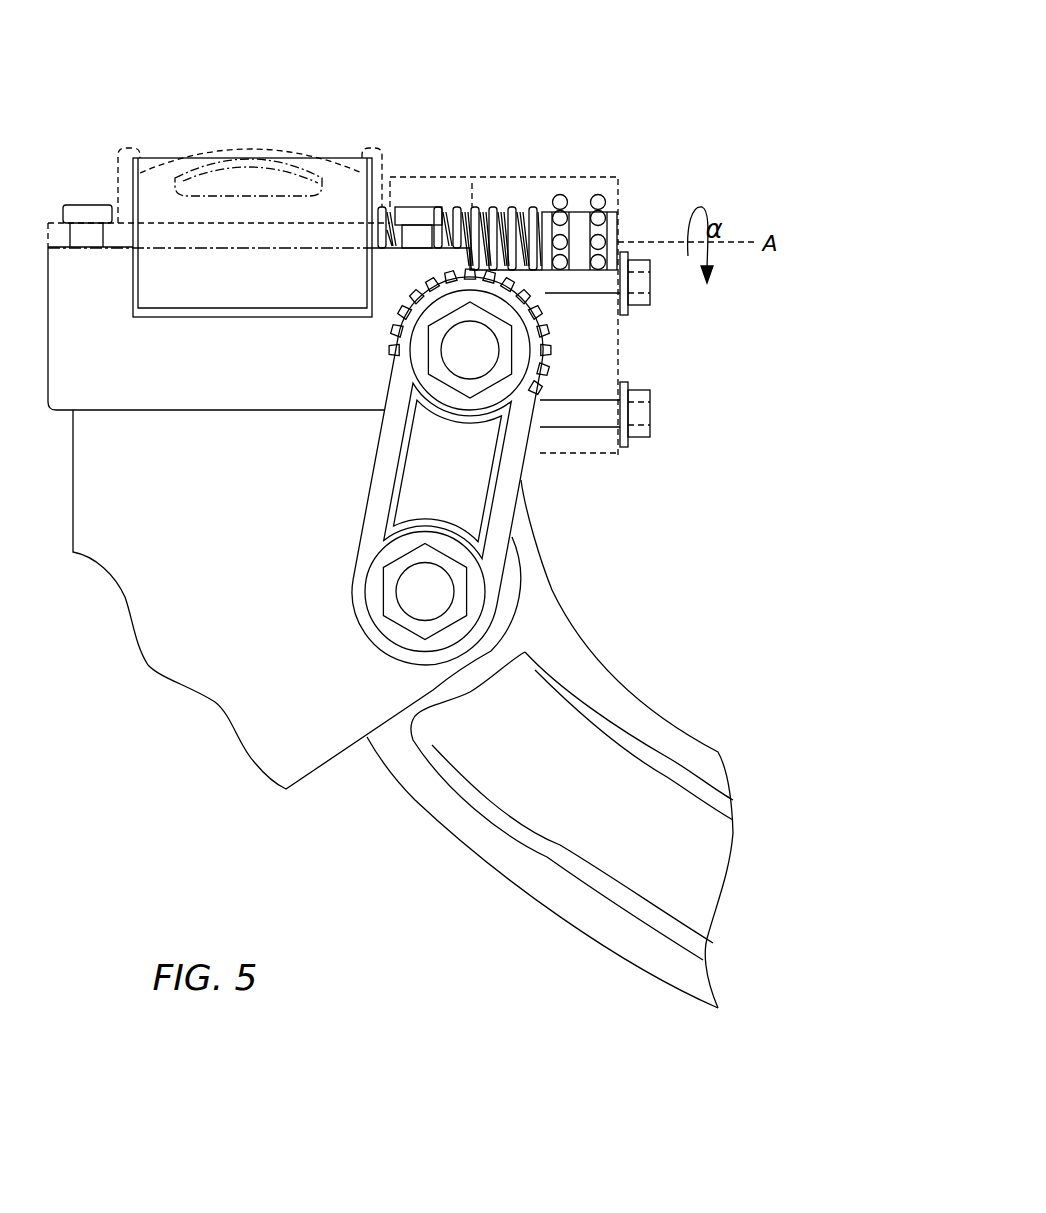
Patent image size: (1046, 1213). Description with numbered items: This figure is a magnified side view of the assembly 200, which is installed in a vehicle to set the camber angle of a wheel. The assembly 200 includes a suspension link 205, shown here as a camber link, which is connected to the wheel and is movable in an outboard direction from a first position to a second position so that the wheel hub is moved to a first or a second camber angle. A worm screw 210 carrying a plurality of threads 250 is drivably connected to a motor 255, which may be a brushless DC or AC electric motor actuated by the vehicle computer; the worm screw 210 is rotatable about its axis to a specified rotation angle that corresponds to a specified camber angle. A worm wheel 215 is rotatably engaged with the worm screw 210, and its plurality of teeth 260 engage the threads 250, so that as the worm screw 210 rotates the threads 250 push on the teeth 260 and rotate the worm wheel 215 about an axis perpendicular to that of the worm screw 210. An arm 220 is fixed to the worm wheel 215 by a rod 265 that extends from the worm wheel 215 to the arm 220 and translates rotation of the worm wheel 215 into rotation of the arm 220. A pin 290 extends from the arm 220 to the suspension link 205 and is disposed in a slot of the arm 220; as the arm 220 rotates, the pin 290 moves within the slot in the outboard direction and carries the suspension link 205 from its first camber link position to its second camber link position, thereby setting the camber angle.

The assembly 200 is at (66, 83).
The suspension link 205 is at (612, 695).
The worm screw 210 is at (380, 207).
The worm wheel 215 is at (545, 342).
The arm 220 is at (468, 463).
The threads 250 is at (382, 207).
The motor 255 is at (250, 175).
The teeth 260 is at (465, 268).
The rod 265 is at (468, 356).
The pin 290 is at (423, 592).